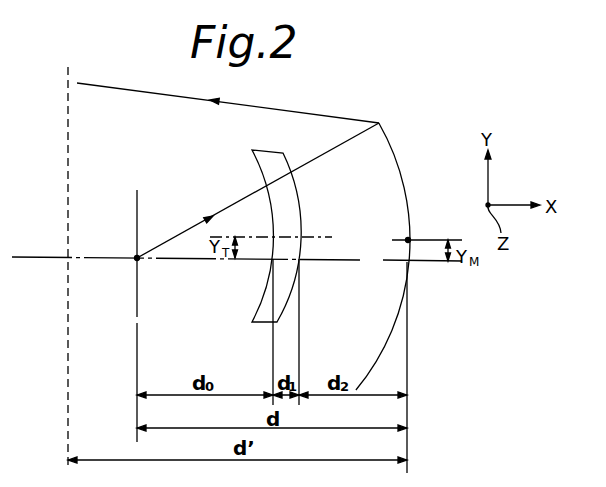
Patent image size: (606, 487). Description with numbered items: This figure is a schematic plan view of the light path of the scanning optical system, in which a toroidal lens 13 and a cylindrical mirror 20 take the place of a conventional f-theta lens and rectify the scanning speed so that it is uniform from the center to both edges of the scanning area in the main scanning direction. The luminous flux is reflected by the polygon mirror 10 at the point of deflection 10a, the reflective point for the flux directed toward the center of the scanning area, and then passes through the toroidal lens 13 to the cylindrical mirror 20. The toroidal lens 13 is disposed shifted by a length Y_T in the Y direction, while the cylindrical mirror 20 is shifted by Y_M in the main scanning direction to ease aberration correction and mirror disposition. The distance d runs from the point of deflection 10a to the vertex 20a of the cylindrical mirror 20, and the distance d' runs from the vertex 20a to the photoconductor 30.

The photoconductor 30 is at (68, 138).
The polygon mirror 10 is at (137, 207).
The point of deflection 10a is at (137, 259).
The toroidal lens 13 is at (300, 200).
The cylindrical mirror 20 is at (394, 318).
The vertex 20a is at (403, 265).